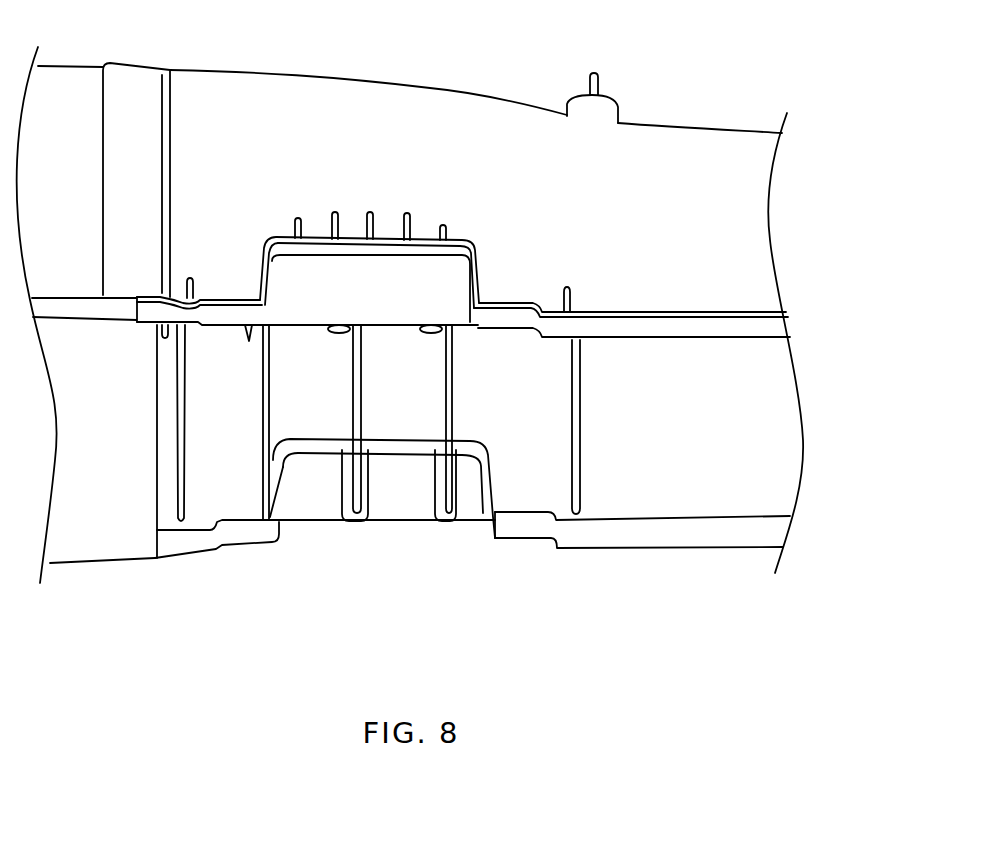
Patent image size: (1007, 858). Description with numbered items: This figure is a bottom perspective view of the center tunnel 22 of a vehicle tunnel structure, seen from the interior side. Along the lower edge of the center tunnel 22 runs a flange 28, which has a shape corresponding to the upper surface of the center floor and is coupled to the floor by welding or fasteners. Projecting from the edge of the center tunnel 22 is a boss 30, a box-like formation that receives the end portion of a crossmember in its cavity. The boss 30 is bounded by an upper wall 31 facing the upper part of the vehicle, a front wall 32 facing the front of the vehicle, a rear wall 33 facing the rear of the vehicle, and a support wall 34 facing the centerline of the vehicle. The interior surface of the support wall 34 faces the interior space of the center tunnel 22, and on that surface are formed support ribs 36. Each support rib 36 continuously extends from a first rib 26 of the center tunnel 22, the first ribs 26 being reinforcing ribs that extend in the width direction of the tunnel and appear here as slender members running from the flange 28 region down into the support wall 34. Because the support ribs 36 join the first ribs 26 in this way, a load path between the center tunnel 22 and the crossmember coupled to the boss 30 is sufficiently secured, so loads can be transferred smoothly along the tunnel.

The center tunnel 22 is at (520, 86).
The first rib 26 is at (450, 388).
The flange 28 is at (740, 310).
The boss 30 is at (318, 219).
The upper wall 31 is at (385, 237).
The front wall 32 is at (262, 258).
The rear wall 33 is at (478, 275).
The support wall 34 is at (422, 277).
The support rib 36 is at (343, 498).